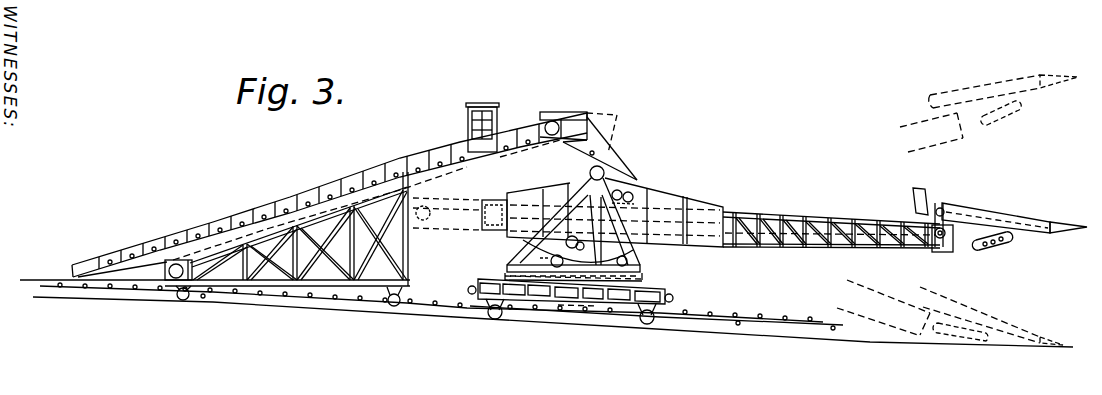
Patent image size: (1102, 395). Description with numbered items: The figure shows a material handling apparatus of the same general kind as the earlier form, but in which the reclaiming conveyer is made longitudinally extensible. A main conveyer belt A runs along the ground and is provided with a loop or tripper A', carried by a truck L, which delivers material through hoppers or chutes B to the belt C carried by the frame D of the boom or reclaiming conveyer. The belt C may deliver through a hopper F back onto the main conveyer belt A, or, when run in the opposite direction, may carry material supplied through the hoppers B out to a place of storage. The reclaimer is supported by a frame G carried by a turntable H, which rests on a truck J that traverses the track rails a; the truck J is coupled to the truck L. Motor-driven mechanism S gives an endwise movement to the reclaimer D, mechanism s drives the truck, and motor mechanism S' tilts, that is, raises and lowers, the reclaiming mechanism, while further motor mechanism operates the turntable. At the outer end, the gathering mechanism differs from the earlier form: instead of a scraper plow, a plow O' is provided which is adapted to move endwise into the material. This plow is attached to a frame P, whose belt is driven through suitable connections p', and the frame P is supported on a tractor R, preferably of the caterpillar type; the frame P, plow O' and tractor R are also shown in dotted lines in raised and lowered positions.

The main conveyer belt A is at (431, 248).
The track rails a is at (227, 305).
The truck L is at (192, 223).
The loop or tripper A' is at (499, 117).
The hoppers or chutes B is at (568, 179).
The motor-driven mechanism for endwise movement S is at (601, 212).
The motor mechanism for tilting S' is at (605, 254).
The frame G is at (520, 246).
The turntable H is at (640, 277).
The truck J is at (543, 292).
The hopper F is at (570, 298).
The motor-driven mechanism for driving the truck s is at (473, 307).
The belt C is at (850, 222).
The frame of the boom or reclaiming conveyer D is at (827, 221).
The driving connections p' is at (932, 235).
The frame P is at (1008, 214).
The plow O' is at (1063, 199).
The tractor R is at (998, 250).